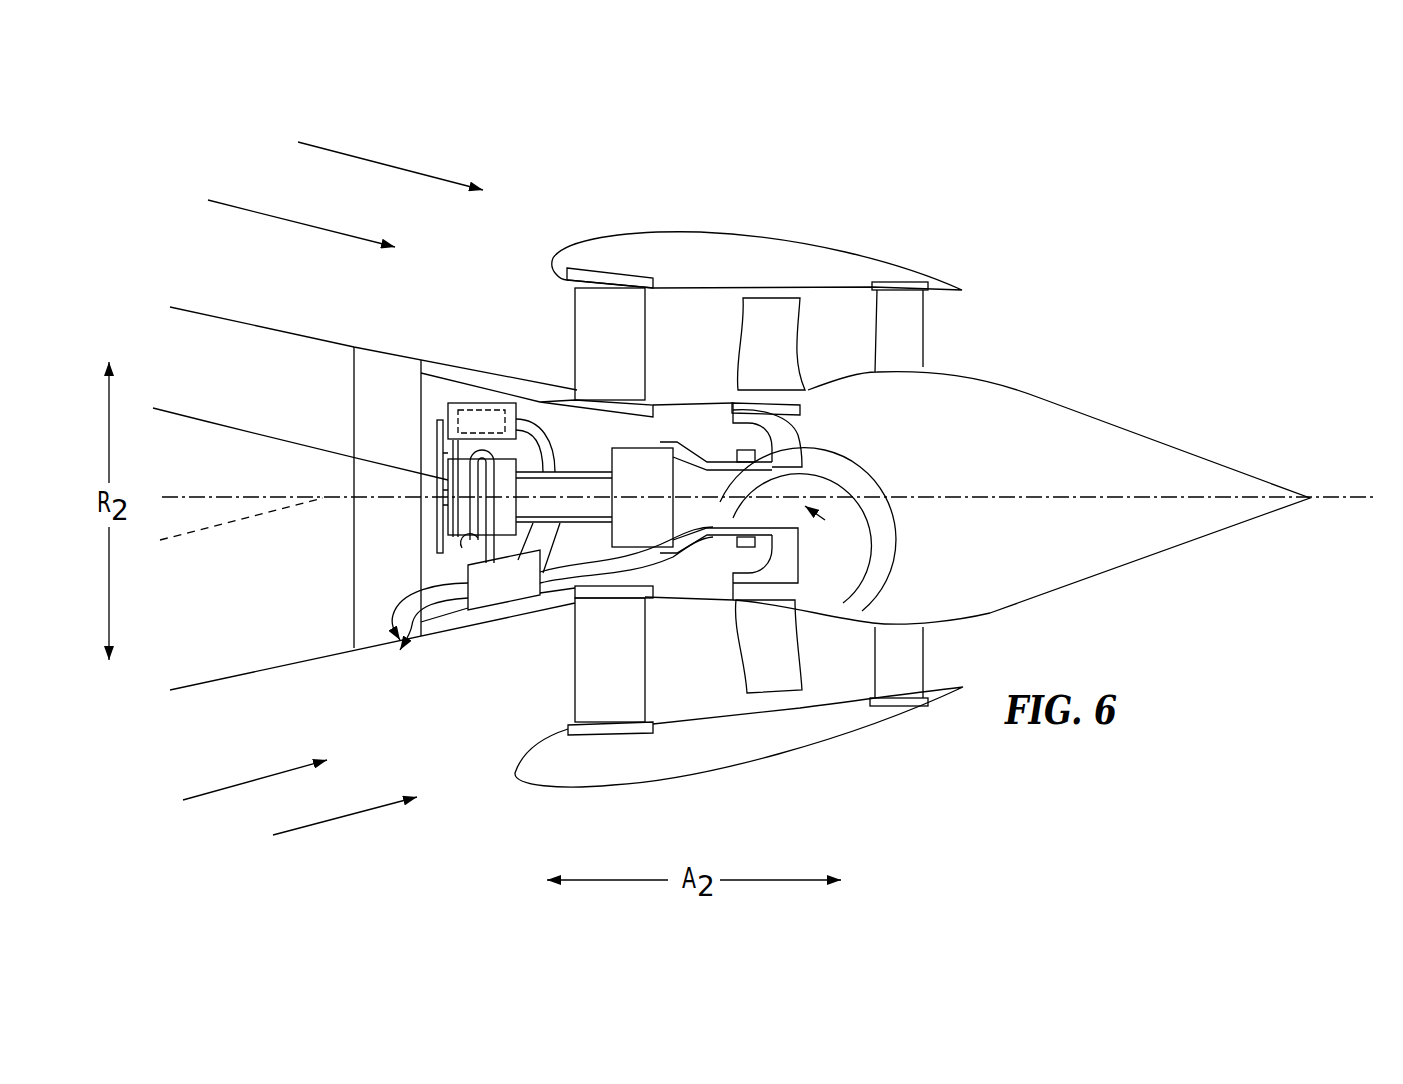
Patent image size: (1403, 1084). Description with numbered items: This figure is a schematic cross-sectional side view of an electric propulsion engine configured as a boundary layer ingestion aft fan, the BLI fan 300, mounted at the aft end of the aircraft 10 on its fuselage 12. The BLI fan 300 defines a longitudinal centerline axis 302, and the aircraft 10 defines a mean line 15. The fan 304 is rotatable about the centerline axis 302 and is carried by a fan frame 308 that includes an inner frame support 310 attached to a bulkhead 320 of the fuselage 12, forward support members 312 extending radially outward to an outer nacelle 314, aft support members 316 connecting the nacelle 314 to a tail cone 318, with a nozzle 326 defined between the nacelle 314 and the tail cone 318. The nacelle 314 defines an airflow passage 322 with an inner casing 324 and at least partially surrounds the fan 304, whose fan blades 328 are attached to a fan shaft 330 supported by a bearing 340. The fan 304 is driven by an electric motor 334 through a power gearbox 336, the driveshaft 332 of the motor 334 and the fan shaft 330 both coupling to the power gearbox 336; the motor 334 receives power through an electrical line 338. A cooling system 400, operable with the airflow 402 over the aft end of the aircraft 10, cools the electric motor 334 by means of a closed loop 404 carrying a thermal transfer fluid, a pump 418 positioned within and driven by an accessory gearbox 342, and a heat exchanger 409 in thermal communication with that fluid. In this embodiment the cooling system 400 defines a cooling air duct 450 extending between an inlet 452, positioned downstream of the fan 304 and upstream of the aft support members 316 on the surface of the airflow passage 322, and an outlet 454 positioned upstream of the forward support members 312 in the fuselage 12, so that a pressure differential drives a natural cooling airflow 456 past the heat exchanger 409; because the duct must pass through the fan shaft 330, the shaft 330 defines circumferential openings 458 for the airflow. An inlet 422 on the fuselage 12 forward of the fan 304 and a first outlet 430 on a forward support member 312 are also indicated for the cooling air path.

The aircraft 10 is at (258, 308).
The fuselage 12 is at (223, 678).
The mean line 15 is at (188, 530).
The BLI fan 300 is at (1017, 165).
The longitudinal centerline axis 302 is at (1340, 497).
The fan 304 is at (830, 325).
The fan frame 308 is at (538, 333).
The inner frame support 310 is at (500, 373).
The forward support members 312 is at (603, 298).
The outer nacelle 314 is at (673, 232).
The aft support members 316 is at (900, 303).
The tail cone 318 is at (1182, 447).
The bulkhead 320 is at (353, 408).
The airflow passage 322 is at (690, 325).
The inner casing 324 is at (722, 400).
The nozzle 326 is at (955, 327).
The fan blades 328 is at (775, 680).
The fan shaft 330 is at (767, 465).
The driveshaft 332 is at (507, 603).
The electric motor 334 is at (460, 550).
The power gearbox 336 is at (663, 515).
The electrical line 338 is at (188, 415).
The bearing 340 is at (750, 445).
The accessory gearbox 342 is at (467, 403).
The cooling system 400 is at (457, 633).
The airflow 402 is at (402, 168).
The closed loop 404 is at (540, 408).
The heat exchanger 409 is at (543, 573).
The pump 418 is at (448, 415).
The inlet 422 is at (260, 685).
The first outlet 430 is at (655, 660).
The cooling air duct 450 is at (855, 585).
The inlet 452 is at (842, 620).
The outlet 454 is at (400, 645).
The airflow 456 is at (847, 540).
The circumferential openings 458 is at (733, 545).